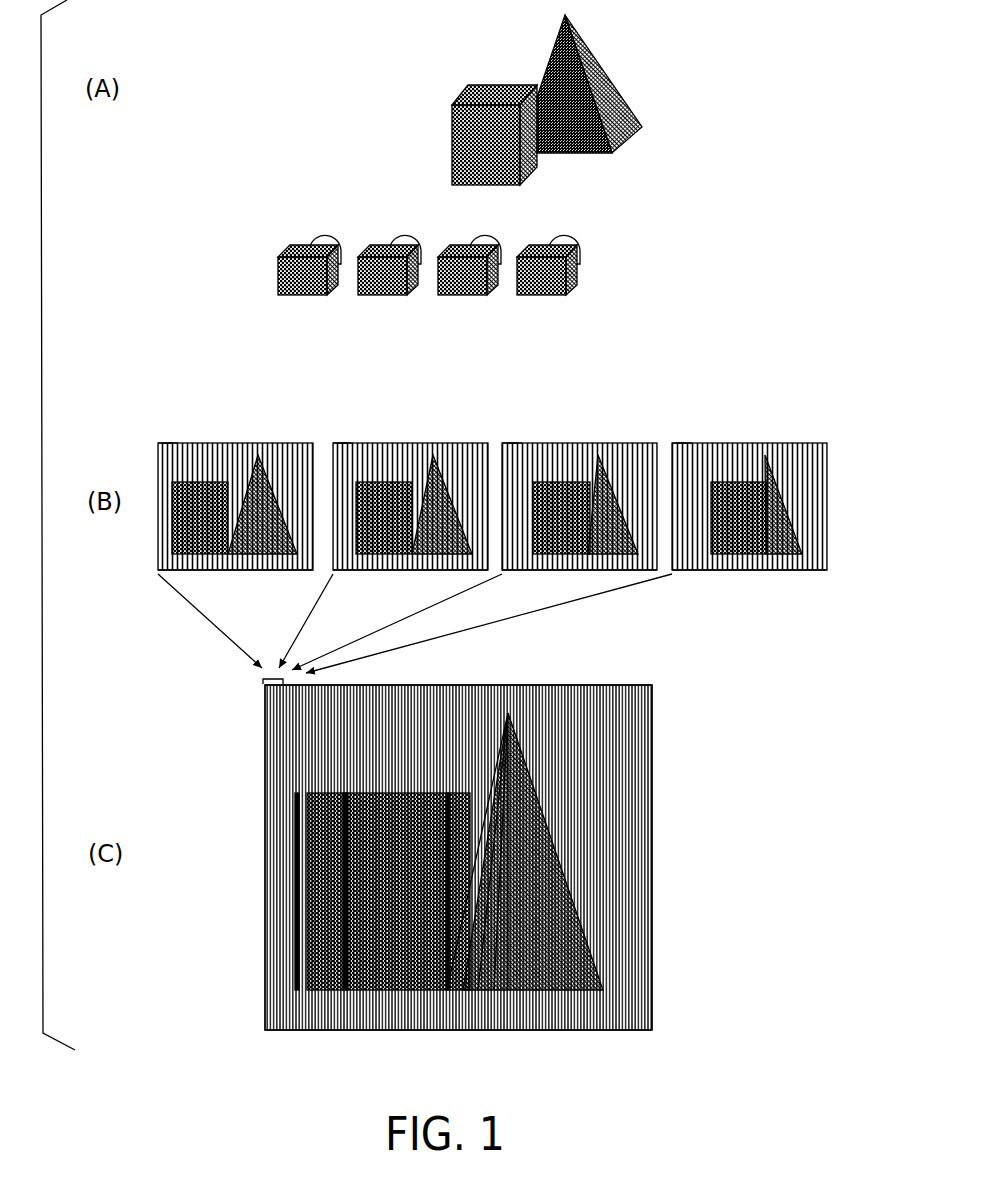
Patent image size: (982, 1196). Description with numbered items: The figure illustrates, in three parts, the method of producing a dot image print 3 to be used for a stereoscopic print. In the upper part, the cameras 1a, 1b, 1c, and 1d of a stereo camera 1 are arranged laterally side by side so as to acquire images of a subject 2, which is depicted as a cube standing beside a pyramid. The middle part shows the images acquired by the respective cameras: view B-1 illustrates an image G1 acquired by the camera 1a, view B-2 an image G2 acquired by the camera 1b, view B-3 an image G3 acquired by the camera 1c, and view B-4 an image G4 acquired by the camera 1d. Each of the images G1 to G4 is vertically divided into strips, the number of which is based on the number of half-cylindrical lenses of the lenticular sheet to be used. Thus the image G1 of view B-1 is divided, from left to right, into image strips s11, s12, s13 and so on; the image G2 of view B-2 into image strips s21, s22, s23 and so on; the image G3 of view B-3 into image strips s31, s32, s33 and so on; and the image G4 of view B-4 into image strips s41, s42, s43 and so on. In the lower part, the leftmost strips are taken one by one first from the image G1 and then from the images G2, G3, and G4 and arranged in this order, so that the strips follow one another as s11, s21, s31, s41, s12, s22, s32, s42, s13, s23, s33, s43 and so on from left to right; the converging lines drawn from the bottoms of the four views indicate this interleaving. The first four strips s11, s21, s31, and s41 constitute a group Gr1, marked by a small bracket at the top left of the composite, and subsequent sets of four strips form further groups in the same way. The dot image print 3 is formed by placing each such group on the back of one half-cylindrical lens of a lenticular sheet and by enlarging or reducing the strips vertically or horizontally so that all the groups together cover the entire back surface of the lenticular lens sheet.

The stereo camera 1 is at (395, 294).
The camera 1a is at (542, 282).
The camera 1b is at (463, 282).
The camera 1c is at (383, 282).
The camera 1d is at (303, 282).
The subject 2 is at (625, 70).
The dot image print 3 is at (263, 822).
The image view B-1 is at (235, 519).
The image view B-2 is at (410, 519).
The image view B-3 is at (579, 519).
The image view B-4 is at (749, 519).
The image strip s11 is at (158, 443).
The image strip s12 is at (168, 443).
The image strip s13 is at (173, 443).
The image strip s21 is at (333, 443).
The image strip s22 is at (343, 443).
The image strip s23 is at (348, 443).
The image strip s31 is at (502, 443).
The image strip s32 is at (512, 443).
The image strip s33 is at (517, 443).
The image strip s41 is at (672, 443).
The image strip s42 is at (681, 443).
The image strip s43 is at (687, 443).
The image G1 is at (158, 571).
The image G2 is at (385, 572).
The image G3 is at (537, 573).
The image G4 is at (720, 574).
The group Gr1 is at (272, 676).